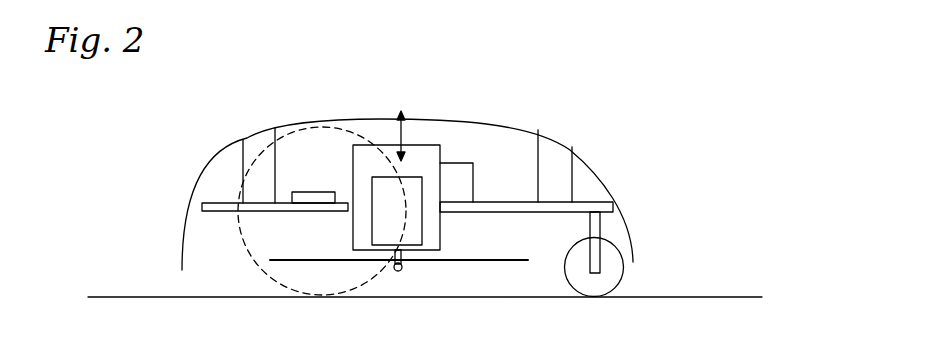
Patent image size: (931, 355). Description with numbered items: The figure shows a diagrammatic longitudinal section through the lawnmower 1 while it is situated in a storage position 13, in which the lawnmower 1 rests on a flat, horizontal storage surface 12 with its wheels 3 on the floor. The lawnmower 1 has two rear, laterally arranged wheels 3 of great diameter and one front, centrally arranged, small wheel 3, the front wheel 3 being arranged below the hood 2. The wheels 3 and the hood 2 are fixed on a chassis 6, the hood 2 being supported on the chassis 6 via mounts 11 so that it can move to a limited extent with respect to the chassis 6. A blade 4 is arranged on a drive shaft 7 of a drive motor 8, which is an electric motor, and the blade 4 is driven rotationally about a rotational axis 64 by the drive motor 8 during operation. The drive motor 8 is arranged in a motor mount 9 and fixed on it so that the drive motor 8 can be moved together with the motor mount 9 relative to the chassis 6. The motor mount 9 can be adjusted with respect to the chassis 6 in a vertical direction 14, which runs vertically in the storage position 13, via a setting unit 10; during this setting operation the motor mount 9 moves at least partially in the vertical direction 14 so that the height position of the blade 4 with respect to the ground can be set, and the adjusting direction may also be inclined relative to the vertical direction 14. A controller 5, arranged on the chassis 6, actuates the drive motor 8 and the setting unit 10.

The lawnmower 1 is at (252, 105).
The hood 2 is at (633, 237).
The wheel 3 is at (252, 257).
The blade 4 is at (503, 262).
The controller 5 is at (313, 192).
The chassis 6 is at (212, 203).
The drive shaft 7 is at (403, 267).
The drive motor 8 is at (395, 190).
The motor mount 9 is at (427, 145).
The setting unit 10 is at (463, 180).
The mount 11 is at (243, 160).
The storage surface 12 is at (728, 297).
The storage position 13 is at (714, 104).
The vertical direction 14 is at (398, 128).
The rotational axis 64 is at (393, 268).